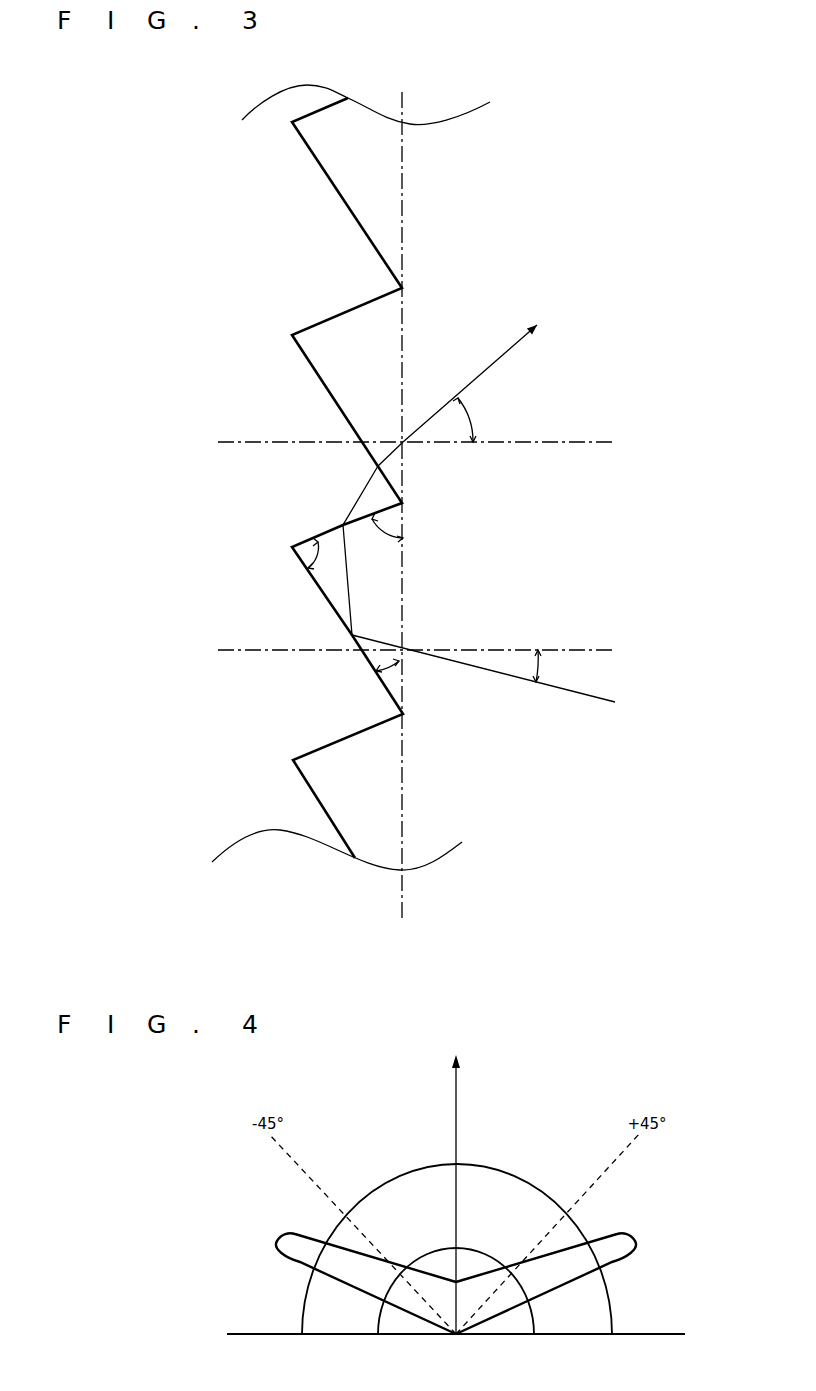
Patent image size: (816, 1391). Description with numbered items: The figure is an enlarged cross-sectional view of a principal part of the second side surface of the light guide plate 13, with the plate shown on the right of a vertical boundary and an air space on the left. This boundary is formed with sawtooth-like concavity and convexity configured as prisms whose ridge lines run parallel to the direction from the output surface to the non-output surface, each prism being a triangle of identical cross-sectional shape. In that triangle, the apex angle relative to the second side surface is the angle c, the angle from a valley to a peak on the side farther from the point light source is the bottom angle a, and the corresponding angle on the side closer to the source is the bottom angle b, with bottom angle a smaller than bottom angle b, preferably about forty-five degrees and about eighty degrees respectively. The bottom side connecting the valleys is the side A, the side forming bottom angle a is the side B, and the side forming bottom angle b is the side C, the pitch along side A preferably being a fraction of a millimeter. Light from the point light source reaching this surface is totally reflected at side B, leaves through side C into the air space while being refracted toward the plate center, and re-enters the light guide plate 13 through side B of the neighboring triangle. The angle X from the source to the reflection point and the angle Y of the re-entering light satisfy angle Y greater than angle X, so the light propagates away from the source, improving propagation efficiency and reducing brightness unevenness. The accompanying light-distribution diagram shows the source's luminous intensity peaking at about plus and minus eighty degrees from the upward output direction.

The light guide plate 13 is at (479, 211).
The side A is at (414, 505).
The side B is at (467, 662).
The side C is at (352, 550).
The bottom angle a is at (387, 661).
The bottom angle b is at (387, 533).
The angle c is at (318, 553).
The angle X is at (543, 666).
The angle Y is at (467, 420).